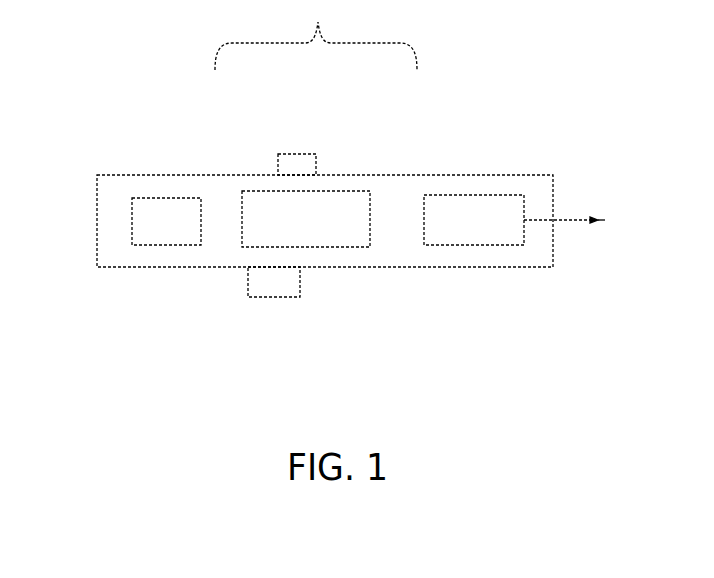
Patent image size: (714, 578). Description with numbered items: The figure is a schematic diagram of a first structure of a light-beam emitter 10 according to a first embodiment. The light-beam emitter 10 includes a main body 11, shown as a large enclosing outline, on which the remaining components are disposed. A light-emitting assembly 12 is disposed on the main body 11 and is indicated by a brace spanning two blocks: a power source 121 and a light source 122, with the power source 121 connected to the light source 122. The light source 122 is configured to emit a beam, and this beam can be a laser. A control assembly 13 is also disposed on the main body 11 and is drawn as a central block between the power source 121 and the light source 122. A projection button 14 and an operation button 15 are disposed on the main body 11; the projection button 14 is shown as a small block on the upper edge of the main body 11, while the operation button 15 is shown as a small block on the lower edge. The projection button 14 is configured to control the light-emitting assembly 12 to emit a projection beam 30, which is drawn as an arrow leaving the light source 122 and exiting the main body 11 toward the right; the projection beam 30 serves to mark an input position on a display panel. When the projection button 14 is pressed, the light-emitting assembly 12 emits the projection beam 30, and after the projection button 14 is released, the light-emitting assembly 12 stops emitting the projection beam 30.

The light-beam emitter 10 is at (100, 120).
The main body 11 is at (125, 268).
The light-emitting assembly 12 is at (316, 35).
The power source 121 is at (186, 212).
The light source 122 is at (440, 211).
The control assembly 13 is at (358, 230).
The projection button 14 is at (306, 165).
The operation button 15 is at (264, 283).
The projection beam 30 is at (572, 222).